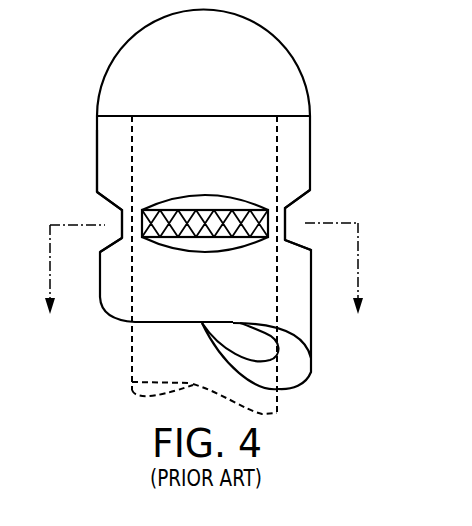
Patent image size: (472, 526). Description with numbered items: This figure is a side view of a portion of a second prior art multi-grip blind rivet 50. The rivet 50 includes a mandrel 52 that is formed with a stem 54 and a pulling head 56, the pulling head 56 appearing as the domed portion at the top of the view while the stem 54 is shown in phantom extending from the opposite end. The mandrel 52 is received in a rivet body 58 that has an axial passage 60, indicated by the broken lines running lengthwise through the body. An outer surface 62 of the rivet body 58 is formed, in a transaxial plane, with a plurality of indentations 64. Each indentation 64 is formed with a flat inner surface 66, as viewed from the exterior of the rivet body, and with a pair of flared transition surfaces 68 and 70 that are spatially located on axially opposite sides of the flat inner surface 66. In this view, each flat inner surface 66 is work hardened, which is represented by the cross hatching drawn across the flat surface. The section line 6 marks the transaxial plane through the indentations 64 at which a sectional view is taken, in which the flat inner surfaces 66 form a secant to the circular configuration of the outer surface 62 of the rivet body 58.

The multi-grip blind rivet 50 is at (215, 224).
The mandrel 52 is at (124, 371).
The stem 54 is at (277, 413).
The pulling head 56 is at (275, 48).
The rivet body 58 is at (321, 152).
The axial passage 60 is at (139, 149).
The outer surface 62 is at (107, 175).
The indentations 64 is at (323, 195).
The flat inner surface 66 is at (117, 218).
The flared transition surface 68 is at (104, 249).
The flared transition surface 70 is at (185, 204).
The section line 6- 6 is at (204, 284).